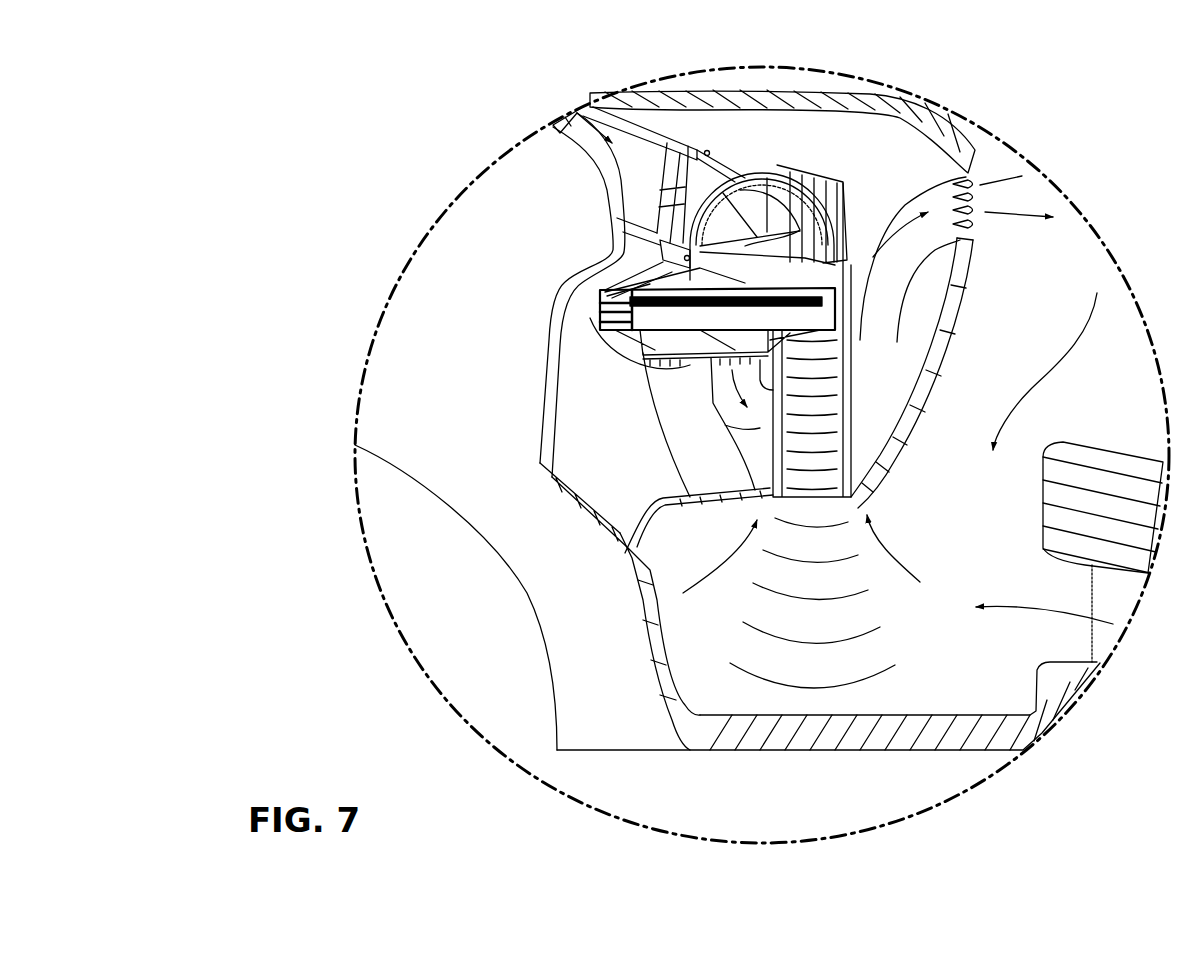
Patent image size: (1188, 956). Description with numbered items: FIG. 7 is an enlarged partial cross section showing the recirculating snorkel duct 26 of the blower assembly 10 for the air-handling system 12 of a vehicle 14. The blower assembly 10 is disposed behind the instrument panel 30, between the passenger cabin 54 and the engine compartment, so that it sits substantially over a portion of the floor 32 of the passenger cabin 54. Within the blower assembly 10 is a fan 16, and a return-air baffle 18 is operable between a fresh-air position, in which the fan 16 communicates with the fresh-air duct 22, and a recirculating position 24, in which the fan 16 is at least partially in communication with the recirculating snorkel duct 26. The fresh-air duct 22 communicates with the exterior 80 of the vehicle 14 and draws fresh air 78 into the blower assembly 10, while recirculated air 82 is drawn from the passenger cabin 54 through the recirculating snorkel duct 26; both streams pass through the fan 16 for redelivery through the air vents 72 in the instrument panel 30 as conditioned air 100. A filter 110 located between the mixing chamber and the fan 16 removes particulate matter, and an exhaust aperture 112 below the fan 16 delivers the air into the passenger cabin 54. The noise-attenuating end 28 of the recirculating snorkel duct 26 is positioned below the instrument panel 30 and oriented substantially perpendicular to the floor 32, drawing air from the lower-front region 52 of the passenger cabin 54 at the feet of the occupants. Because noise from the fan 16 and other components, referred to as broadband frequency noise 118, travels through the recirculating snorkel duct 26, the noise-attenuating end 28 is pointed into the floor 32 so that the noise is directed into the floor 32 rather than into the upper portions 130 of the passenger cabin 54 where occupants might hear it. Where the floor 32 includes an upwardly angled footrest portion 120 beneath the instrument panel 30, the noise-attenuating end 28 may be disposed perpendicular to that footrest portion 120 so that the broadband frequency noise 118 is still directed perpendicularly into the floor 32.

The blower assembly 10 is at (845, 178).
The air-handling system 12 is at (735, 92).
The vehicle 14 is at (488, 540).
The fan 16 is at (650, 395).
The return-air baffle 18 is at (743, 207).
The fresh-air duct 22 is at (670, 175).
The recirculating position 24 is at (768, 205).
The recirculating snorkel duct 26 is at (850, 373).
The noise-attenuating end 28 is at (773, 500).
The instrument panel 30 is at (976, 153).
The floor 32 is at (887, 712).
The lower-front region 52 is at (973, 695).
The passenger cabin 54 is at (1139, 409).
The air vents 72 is at (962, 208).
The fresh air 78 is at (600, 150).
The exterior 80 is at (491, 91).
The recirculated air 82 is at (880, 543).
The conditioned air 100 is at (893, 261).
The filter 110 is at (603, 342).
The exhaust aperture 112 is at (687, 367).
The broadband frequency noise 118 is at (757, 690).
The footrest portion 120 is at (660, 583).
The upper portions 130 is at (1071, 128).